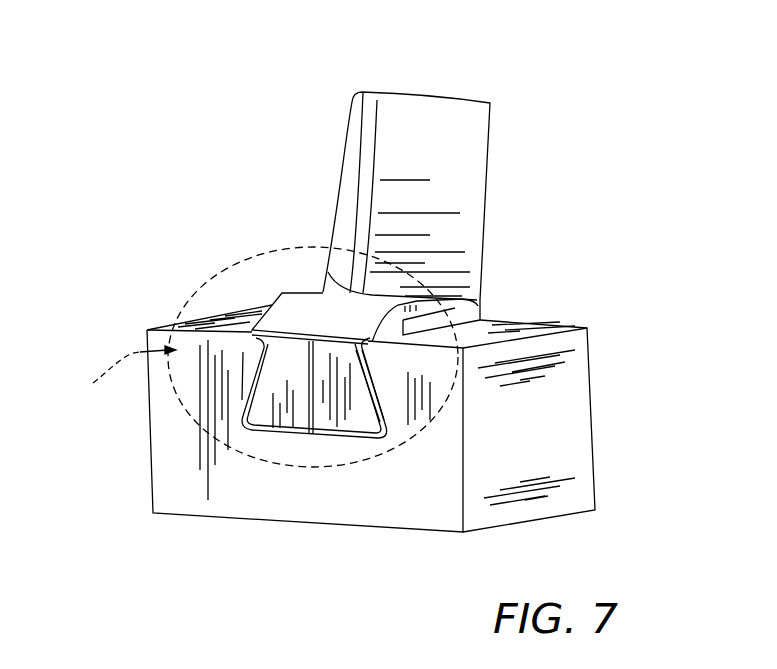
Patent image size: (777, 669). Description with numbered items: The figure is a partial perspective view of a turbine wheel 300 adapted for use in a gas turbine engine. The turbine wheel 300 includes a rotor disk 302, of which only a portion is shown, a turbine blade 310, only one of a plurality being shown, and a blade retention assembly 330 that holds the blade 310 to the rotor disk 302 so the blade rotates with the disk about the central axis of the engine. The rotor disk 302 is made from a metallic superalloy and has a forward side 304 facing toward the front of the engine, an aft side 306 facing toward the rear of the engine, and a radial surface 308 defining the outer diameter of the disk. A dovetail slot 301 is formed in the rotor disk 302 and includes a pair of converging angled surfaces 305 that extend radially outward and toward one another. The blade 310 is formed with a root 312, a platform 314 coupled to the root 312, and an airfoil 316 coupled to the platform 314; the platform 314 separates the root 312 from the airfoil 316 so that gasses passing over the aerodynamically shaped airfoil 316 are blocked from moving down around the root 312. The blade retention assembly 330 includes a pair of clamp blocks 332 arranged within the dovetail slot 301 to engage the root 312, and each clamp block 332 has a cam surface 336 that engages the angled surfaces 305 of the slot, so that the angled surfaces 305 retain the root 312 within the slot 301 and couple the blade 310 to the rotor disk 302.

The turbine wheel 300 is at (599, 77).
The dovetail slot 301 is at (334, 455).
The rotor disk 302 is at (606, 378).
The forward side 304 is at (446, 505).
The angled surfaces 305 is at (367, 371).
The aft side 306 is at (594, 458).
The radial surface 308 is at (540, 330).
The turbine blade 310 is at (560, 178).
The root 312 is at (241, 350).
The platform 314 is at (295, 277).
The airfoil 316 is at (334, 145).
The blade retention assembly 330 is at (238, 376).
The clamp blocks 332 is at (266, 412).
The cam surface 336 is at (375, 392).